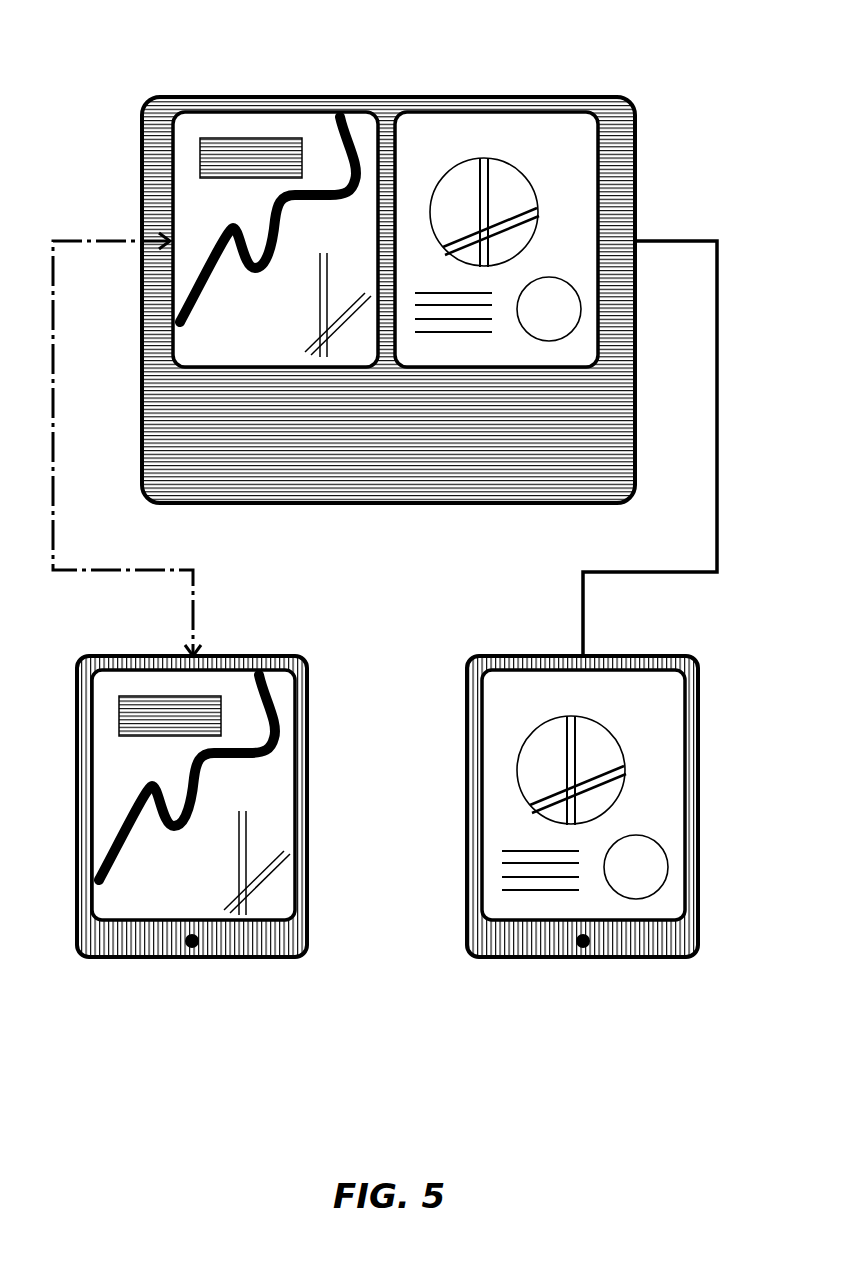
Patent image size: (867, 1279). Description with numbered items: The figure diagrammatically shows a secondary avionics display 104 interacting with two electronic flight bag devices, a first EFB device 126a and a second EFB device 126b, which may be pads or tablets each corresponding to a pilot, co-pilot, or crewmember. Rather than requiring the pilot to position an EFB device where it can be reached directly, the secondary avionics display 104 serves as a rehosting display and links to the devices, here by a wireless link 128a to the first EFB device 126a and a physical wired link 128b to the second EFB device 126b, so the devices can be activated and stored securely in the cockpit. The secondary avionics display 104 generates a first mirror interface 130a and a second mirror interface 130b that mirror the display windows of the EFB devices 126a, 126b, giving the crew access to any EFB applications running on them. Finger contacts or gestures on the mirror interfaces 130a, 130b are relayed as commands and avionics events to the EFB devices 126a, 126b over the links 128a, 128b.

The secondary avionics display 104 is at (407, 256).
The mirror interface 130a is at (250, 125).
The mirror interface 130b is at (570, 130).
The wireless link 128a is at (197, 608).
The physical link 128b is at (578, 613).
The EFB device 126a is at (190, 958).
The EFB device 126b is at (607, 960).